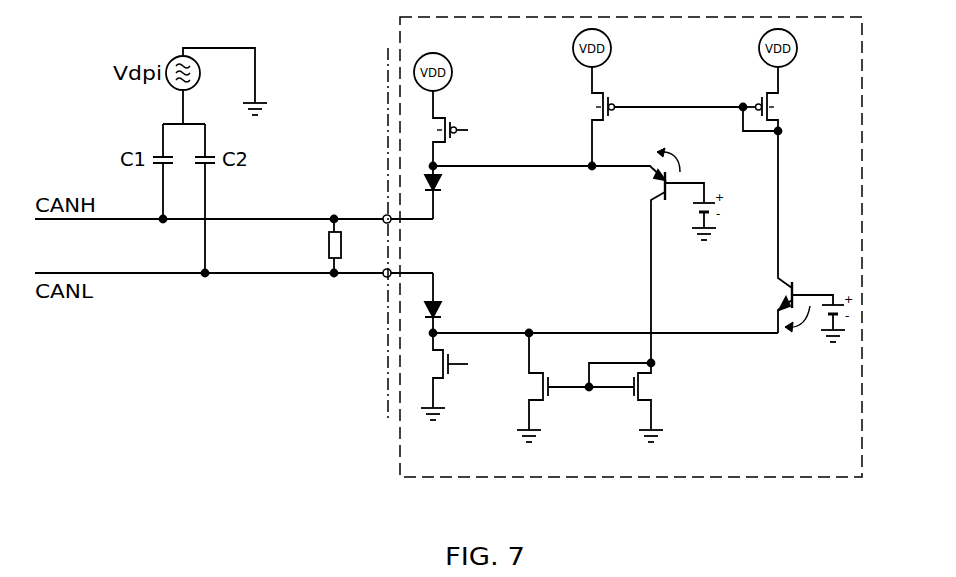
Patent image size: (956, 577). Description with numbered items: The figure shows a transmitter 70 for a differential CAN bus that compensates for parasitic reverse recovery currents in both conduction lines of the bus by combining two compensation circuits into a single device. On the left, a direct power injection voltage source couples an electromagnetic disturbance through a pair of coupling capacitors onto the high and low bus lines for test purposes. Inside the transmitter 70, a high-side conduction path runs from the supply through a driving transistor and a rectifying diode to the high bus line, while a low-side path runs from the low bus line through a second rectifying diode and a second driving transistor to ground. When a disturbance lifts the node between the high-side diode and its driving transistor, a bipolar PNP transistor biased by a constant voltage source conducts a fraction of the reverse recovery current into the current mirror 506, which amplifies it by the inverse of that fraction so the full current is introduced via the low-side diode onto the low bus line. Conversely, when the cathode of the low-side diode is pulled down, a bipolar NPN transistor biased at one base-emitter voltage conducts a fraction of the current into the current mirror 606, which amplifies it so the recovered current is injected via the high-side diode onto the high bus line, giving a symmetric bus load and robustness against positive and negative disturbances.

The transmitter 70 is at (653, 477).
The current mirror 606 is at (704, 60).
The current mirror 506 is at (614, 460).